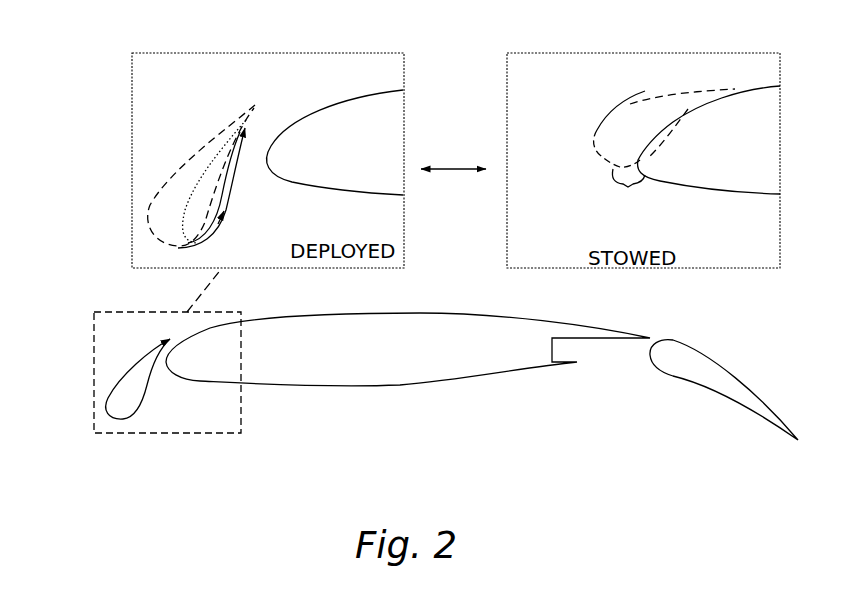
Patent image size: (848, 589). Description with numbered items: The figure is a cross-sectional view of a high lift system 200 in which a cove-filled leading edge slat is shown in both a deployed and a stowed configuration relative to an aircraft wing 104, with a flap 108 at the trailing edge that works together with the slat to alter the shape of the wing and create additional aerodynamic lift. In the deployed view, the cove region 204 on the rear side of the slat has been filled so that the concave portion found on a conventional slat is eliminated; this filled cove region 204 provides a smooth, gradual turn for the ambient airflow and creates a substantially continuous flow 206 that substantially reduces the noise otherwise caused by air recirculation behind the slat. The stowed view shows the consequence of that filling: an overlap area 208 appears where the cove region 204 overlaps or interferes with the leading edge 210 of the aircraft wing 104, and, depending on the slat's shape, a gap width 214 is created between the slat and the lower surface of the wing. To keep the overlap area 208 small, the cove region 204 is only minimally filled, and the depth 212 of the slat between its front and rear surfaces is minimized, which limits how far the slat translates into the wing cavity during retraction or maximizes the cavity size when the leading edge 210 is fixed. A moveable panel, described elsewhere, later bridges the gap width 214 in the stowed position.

The high lift system 200 is at (104, 47).
The cove region 204 is at (198, 202).
The substantially continuous flow 206 is at (227, 231).
The overlap area 208 is at (640, 148).
The leading edge 210 is at (647, 141).
The depth 212 is at (666, 153).
The gap width 214 is at (628, 187).
The aircraft wing 104 is at (738, 178).
The flap 108 is at (698, 372).